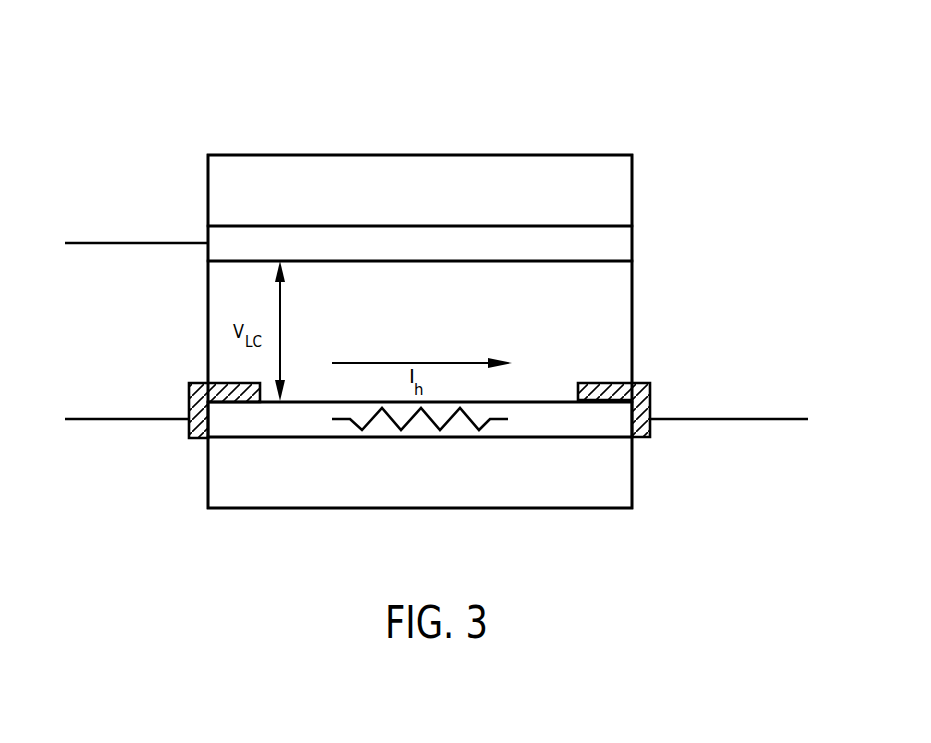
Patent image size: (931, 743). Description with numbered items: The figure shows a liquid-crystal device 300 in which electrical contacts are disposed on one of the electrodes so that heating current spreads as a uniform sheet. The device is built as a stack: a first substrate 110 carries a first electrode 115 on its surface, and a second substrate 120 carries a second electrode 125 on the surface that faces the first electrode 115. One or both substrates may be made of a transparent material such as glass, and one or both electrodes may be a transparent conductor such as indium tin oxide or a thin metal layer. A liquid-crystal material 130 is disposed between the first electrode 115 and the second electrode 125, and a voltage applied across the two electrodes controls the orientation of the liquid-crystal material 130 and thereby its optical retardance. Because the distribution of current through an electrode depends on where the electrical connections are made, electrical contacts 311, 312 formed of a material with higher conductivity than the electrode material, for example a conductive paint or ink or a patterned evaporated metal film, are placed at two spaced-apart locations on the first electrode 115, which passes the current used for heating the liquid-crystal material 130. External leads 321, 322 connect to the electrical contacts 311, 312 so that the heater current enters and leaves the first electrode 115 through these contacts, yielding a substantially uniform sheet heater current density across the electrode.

The LC device 300 is at (453, 66).
The second substrate 120 is at (560, 168).
The second electrode 125 is at (553, 245).
The liquid-crystal material 130 is at (617, 317).
The first electrode 115 is at (553, 415).
The first substrate 110 is at (596, 493).
The electrical contact 311 is at (195, 398).
The electrical contact 312 is at (640, 398).
The first lead 321 is at (87, 418).
The second lead 322 is at (785, 418).